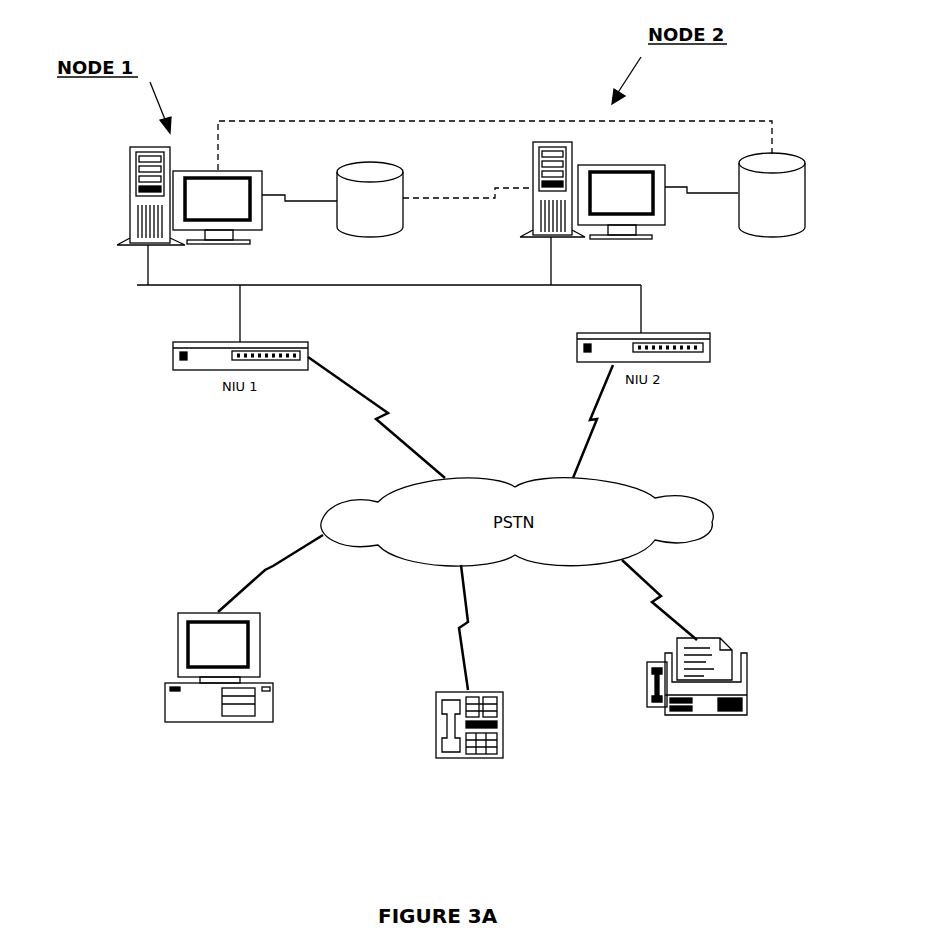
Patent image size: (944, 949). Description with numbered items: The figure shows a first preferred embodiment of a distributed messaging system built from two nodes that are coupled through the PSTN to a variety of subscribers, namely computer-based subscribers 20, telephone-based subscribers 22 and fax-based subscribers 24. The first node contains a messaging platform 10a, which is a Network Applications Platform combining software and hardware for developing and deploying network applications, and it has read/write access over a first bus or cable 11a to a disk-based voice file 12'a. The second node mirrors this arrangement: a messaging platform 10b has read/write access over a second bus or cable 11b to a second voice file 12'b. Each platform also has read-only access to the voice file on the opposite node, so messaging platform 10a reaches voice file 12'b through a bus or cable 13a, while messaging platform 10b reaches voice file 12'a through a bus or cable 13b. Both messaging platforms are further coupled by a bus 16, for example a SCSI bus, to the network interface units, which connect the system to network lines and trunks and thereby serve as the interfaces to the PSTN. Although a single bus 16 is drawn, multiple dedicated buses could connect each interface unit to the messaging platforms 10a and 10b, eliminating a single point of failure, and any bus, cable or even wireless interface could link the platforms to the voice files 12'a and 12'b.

The messaging platform 10a is at (90, 202).
The messaging platform 10b is at (672, 245).
The first bus or cable 11a is at (314, 201).
The second bus or cable 11b is at (722, 194).
The disk-based voice file 12'a is at (402, 196).
The second voice file 12'b is at (806, 193).
The bus or cable 13a is at (314, 120).
The bus or cable 13b is at (503, 188).
The bus 16 is at (432, 288).
The computer-based subscribers 20 is at (178, 633).
The telephone-based subscribers 22 is at (433, 725).
The fax-based subscribers 24 is at (647, 677).